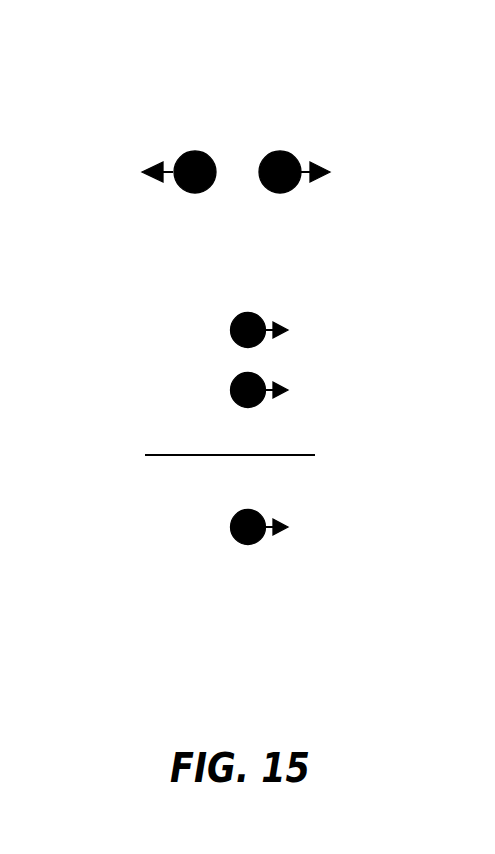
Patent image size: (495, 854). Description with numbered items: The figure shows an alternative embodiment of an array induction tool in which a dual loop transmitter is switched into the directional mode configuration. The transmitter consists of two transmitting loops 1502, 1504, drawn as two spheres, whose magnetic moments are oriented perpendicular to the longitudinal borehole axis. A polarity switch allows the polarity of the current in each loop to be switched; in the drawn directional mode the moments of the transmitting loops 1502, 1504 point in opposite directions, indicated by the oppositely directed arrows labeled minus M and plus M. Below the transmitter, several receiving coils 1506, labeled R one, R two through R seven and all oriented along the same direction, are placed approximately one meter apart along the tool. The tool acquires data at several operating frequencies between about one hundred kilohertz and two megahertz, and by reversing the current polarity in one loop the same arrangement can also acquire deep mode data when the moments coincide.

The transmitting loop 1502 is at (238, 106).
The transmitting loop 1504 is at (353, 137).
The receiving coils 1506 is at (237, 513).